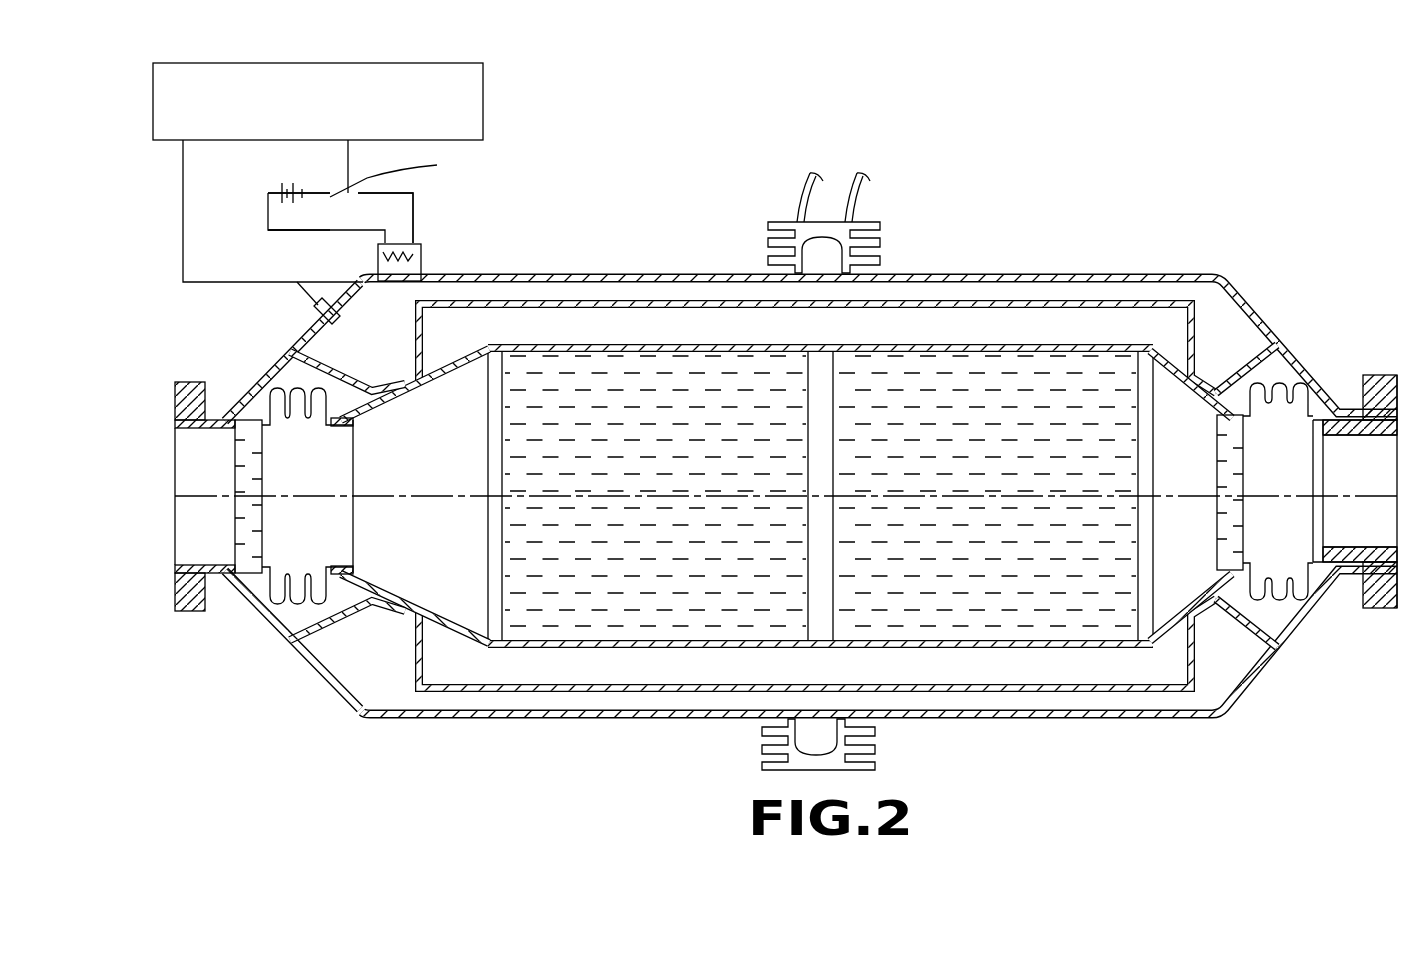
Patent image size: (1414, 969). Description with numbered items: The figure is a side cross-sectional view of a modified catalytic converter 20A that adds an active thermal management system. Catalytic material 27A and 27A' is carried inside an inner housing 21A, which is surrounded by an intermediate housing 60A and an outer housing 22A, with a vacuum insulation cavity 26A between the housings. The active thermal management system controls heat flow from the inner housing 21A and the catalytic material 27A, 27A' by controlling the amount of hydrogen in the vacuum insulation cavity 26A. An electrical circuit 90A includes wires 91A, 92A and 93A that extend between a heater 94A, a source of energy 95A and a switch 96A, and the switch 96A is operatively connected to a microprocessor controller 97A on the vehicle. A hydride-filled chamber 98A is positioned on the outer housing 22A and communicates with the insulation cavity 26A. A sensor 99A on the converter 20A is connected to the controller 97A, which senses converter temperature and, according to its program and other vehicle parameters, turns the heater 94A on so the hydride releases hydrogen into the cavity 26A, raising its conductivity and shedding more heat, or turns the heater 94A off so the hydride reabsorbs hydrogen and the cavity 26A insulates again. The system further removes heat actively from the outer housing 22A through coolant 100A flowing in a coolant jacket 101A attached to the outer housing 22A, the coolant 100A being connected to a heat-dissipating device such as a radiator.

The catalytic converter 20A is at (268, 689).
The inner housing 21A is at (608, 326).
The outer housing 22A is at (549, 260).
The vacuum insulation cavity 26A is at (1225, 330).
The catalytic material 27A is at (655, 576).
The catalytic material 27A' is at (987, 566).
The intermediate housing 60A is at (687, 283).
The electrical circuit 90A is at (250, 229).
The wire 91A is at (282, 232).
The wire 92A is at (328, 197).
The wire 93A is at (413, 212).
The heater 94A is at (395, 272).
The source of energy 95A is at (282, 183).
The switch 96A is at (414, 173).
The microprocessor controller 97A is at (483, 92).
The hydride-filled chamber 98A is at (393, 248).
The sensor 99A is at (318, 312).
The coolant 100A is at (843, 232).
The coolant jacket 101A is at (767, 225).